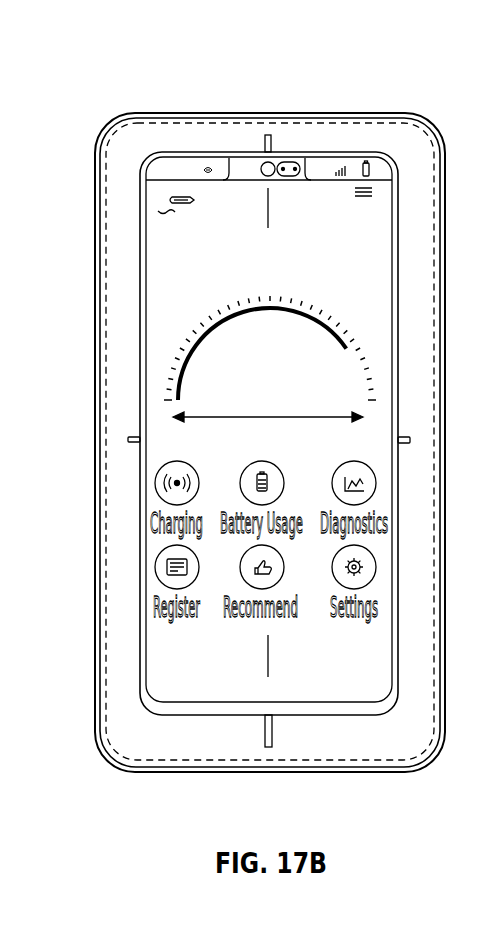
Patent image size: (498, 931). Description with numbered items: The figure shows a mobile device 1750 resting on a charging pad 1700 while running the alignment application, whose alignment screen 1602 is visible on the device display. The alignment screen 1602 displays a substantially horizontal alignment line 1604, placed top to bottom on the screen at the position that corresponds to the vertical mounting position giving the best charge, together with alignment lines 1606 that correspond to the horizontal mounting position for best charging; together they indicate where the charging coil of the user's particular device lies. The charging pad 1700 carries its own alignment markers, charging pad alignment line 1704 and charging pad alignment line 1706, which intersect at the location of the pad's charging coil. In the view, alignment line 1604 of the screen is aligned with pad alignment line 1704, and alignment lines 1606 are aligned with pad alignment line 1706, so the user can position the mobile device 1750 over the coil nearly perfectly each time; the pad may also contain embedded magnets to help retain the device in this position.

The application alignment screen 1602 is at (163, 207).
The horizontal alignment line 1604 is at (200, 418).
The horizontal alignment lines 1606 is at (266, 214).
The charging pad 1700 is at (322, 111).
The charging pad alignment line 1704 is at (130, 438).
The charging pad alignment line 1706 is at (273, 738).
The mobile device 1750 is at (403, 229).